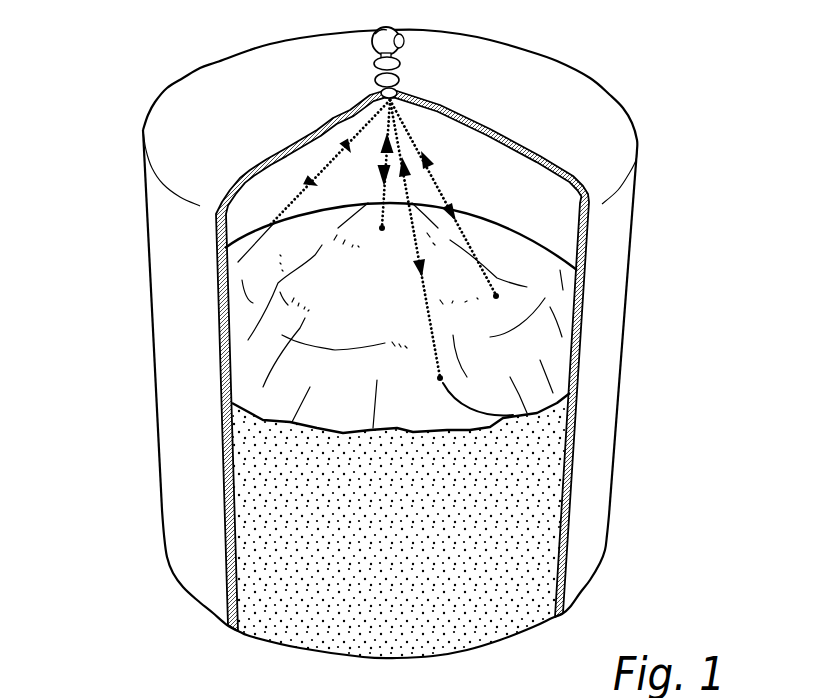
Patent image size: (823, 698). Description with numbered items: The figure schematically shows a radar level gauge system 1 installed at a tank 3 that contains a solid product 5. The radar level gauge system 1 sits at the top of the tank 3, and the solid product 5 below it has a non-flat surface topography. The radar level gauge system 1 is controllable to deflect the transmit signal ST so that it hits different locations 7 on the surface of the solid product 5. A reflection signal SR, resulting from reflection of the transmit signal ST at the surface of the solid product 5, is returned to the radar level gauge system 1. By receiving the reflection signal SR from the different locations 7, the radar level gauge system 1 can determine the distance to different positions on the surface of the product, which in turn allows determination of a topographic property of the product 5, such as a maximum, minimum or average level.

The radar level gauge system 1 is at (432, 63).
The tank 3 is at (608, 243).
The solid product 5 is at (414, 545).
The locations on the surface of the product 7 is at (500, 418).
The transmit signal ST is at (306, 179).
The reflection signal SR is at (342, 143).